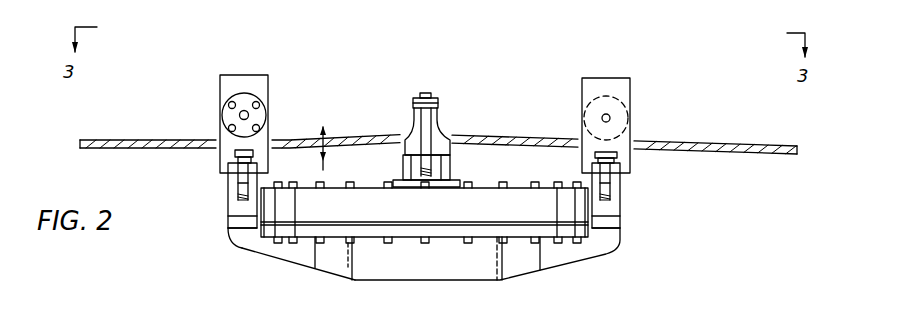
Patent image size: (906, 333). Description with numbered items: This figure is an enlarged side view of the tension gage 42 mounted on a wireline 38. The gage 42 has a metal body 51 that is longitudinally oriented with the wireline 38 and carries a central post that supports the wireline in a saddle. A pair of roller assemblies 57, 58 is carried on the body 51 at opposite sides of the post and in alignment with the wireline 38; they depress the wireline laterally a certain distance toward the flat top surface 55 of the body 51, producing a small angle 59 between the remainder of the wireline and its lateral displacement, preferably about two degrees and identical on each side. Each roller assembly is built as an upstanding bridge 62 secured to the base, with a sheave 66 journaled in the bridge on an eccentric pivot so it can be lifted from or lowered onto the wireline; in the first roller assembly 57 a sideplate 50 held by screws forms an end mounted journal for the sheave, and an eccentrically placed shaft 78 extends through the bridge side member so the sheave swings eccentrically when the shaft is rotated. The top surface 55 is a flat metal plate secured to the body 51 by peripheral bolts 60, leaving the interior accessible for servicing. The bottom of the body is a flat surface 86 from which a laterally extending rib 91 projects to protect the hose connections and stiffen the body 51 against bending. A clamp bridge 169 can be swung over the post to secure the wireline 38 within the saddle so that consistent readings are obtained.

The wireline 38 is at (106, 140).
The gage 42 is at (424, 280).
The sideplate 50 is at (226, 116).
The body 51 is at (475, 156).
The top surface 55 is at (487, 188).
The roller assembly 57 is at (241, 124).
The roller assembly 58 is at (636, 133).
The angle 59 is at (336, 146).
The peripheral bolts 60 is at (535, 187).
The bridge 62 is at (268, 78).
The sheave 66 is at (612, 108).
The shaft 78 is at (250, 115).
The bottom surface 86 is at (243, 230).
The rib 91 is at (303, 258).
The bridge 169 is at (418, 98).